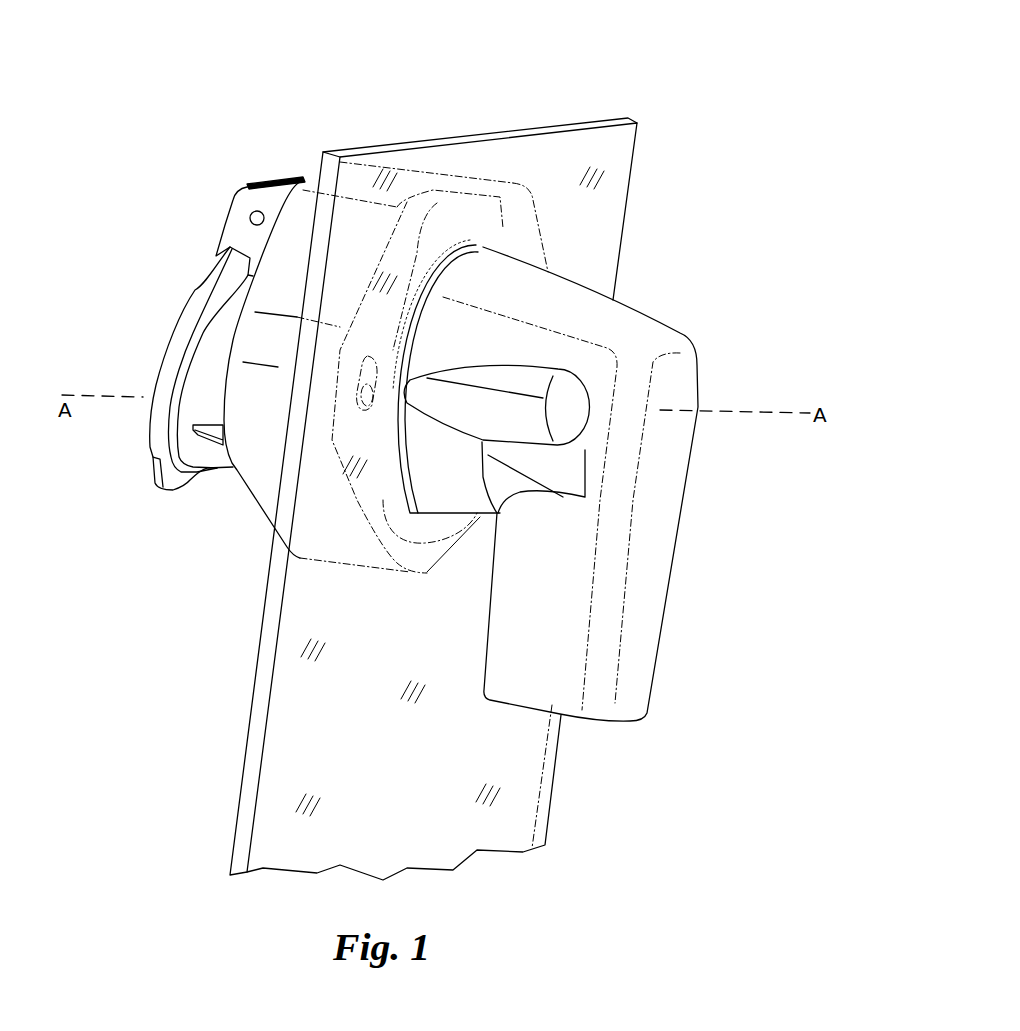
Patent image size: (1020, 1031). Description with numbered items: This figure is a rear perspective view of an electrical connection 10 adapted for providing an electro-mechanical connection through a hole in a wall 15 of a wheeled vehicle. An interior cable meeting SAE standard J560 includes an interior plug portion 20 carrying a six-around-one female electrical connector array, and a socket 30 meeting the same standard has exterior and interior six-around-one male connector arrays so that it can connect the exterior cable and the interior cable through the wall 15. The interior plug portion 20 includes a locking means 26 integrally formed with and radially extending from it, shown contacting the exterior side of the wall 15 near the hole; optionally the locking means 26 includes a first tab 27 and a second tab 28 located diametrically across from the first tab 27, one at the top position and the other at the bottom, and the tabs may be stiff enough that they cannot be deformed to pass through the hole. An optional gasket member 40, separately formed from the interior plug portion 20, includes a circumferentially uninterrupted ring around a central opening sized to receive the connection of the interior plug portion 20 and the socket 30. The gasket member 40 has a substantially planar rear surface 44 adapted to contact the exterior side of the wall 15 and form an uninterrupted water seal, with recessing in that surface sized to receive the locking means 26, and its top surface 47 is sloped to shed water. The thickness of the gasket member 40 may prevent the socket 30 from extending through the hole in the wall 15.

The electrical connection 10 is at (668, 88).
The wall 15 is at (573, 148).
The interior plug portion 20 is at (686, 383).
The locking means 26 is at (475, 215).
The first tab 27 is at (493, 220).
The second tab 28 is at (433, 523).
The socket 30 is at (220, 503).
The gasket member 40 is at (302, 158).
The substantially planar rear surface 44 is at (540, 218).
The top surface 47 is at (367, 170).